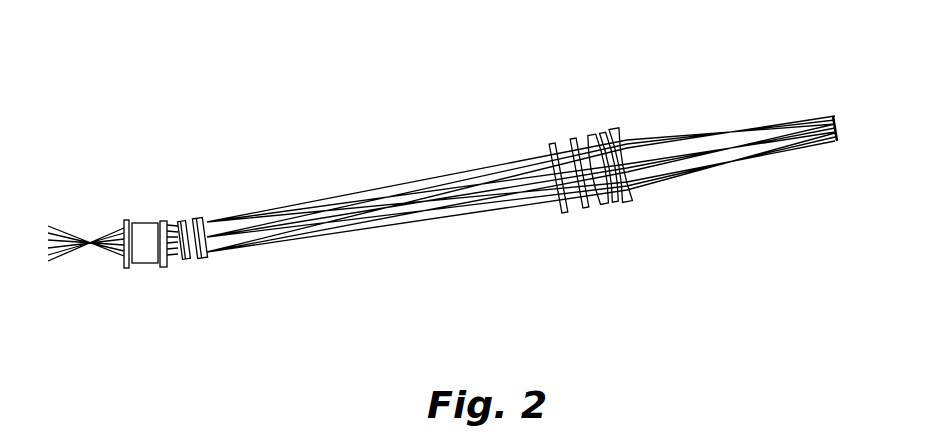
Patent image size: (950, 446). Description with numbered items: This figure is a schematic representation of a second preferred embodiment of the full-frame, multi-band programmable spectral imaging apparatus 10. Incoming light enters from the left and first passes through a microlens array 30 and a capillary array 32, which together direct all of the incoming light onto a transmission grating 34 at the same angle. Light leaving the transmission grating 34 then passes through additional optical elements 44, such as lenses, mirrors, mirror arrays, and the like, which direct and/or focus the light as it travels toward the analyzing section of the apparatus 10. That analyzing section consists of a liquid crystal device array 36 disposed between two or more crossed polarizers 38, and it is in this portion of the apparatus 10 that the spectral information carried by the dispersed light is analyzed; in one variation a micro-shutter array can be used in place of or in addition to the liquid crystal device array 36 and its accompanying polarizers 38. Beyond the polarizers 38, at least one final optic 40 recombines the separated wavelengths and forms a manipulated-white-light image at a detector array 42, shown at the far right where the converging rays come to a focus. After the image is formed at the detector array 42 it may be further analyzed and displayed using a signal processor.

The apparatus 10 is at (230, 44).
The microlens array 30 is at (127, 219).
The capillary array 32 is at (150, 265).
The transmission grating 34 is at (168, 220).
The additional optical elements 44 is at (228, 252).
The liquid crystal device array 36 is at (563, 156).
The crossed polarizers 38 is at (588, 212).
The final optic 40 is at (632, 188).
The detector array 42 is at (838, 130).